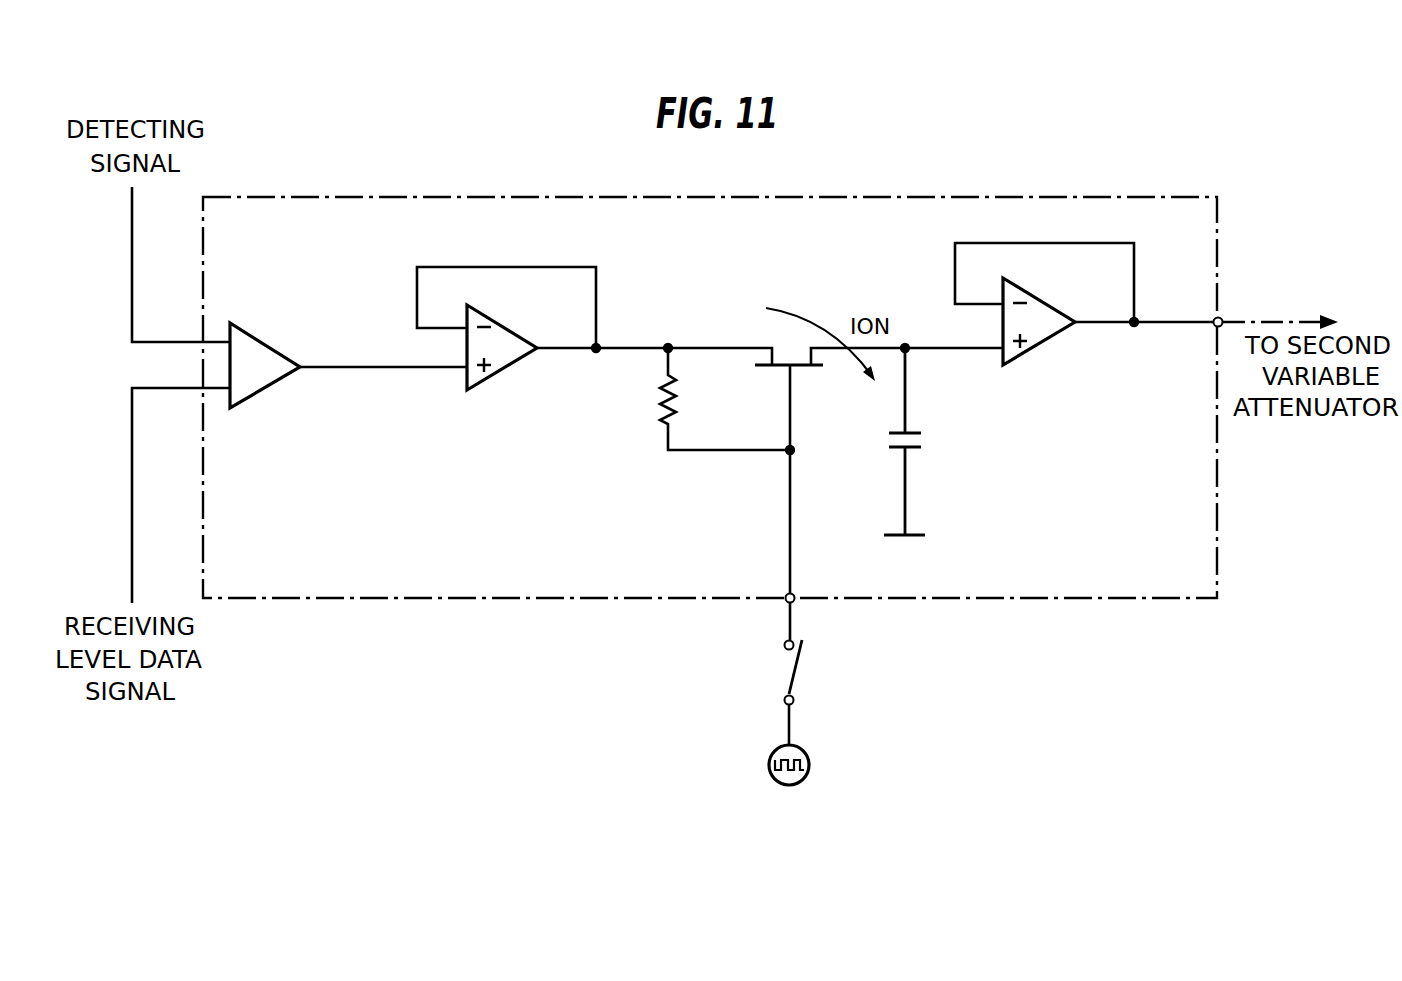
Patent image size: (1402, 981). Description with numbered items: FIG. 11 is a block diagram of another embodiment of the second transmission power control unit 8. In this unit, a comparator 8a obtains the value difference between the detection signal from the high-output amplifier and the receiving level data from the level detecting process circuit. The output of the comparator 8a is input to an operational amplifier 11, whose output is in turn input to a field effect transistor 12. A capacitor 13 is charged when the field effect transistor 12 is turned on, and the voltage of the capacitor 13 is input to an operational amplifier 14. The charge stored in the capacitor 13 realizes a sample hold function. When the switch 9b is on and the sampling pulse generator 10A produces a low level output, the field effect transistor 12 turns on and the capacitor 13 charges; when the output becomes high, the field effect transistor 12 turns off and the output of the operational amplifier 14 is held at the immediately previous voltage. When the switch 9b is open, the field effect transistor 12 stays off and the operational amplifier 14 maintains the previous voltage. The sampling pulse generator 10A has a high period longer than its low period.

The second transmission power control unit 8 is at (954, 600).
The comparator 8a is at (268, 392).
The operational amplifier 11 is at (497, 373).
The field effect transistor 12 is at (803, 367).
The capacitor 13 is at (920, 432).
The operational amplifier 14 is at (1040, 347).
The switch 9b is at (788, 677).
The sampling pulse generator 10A is at (770, 765).